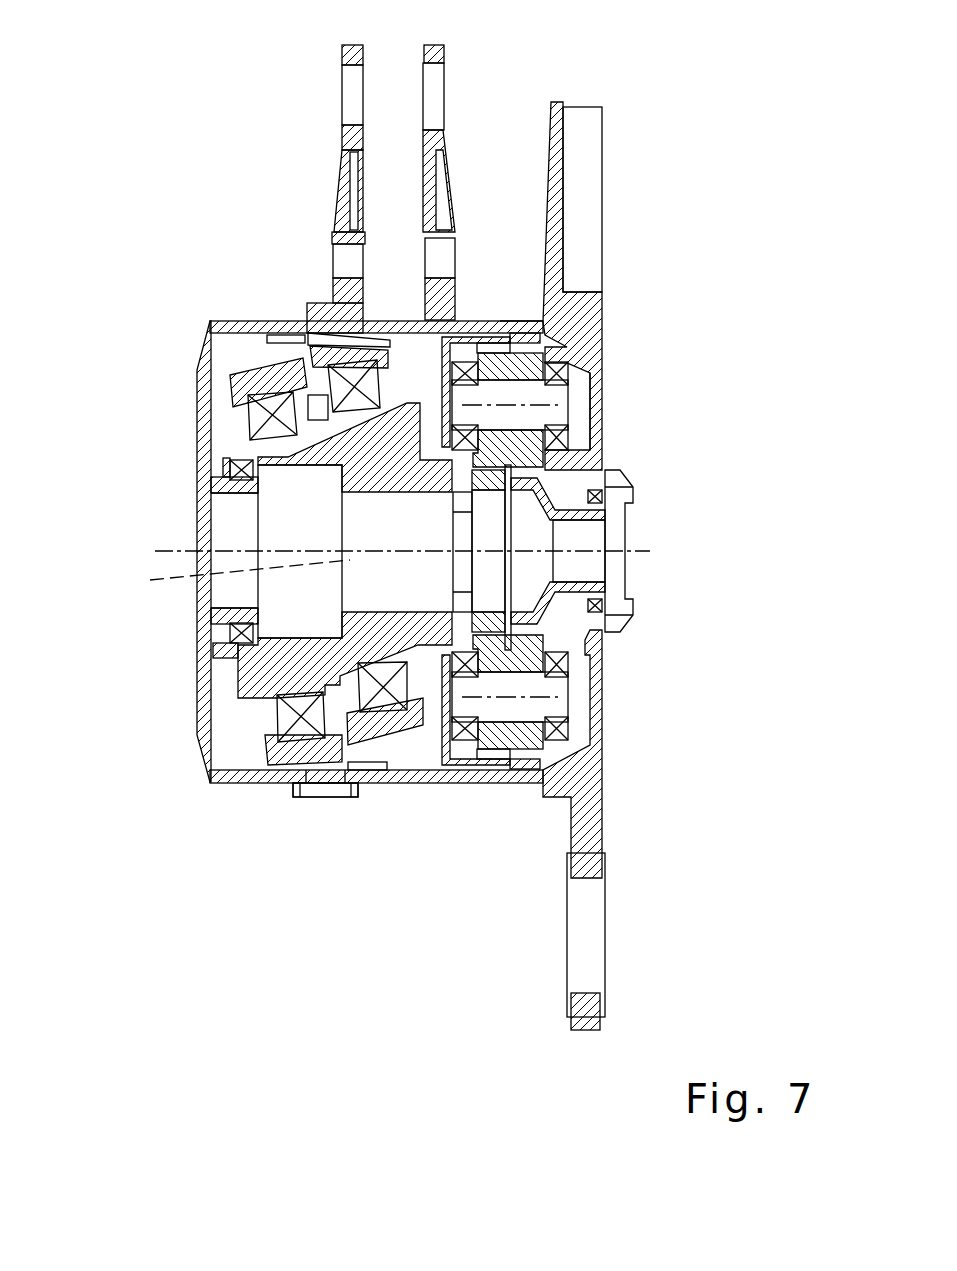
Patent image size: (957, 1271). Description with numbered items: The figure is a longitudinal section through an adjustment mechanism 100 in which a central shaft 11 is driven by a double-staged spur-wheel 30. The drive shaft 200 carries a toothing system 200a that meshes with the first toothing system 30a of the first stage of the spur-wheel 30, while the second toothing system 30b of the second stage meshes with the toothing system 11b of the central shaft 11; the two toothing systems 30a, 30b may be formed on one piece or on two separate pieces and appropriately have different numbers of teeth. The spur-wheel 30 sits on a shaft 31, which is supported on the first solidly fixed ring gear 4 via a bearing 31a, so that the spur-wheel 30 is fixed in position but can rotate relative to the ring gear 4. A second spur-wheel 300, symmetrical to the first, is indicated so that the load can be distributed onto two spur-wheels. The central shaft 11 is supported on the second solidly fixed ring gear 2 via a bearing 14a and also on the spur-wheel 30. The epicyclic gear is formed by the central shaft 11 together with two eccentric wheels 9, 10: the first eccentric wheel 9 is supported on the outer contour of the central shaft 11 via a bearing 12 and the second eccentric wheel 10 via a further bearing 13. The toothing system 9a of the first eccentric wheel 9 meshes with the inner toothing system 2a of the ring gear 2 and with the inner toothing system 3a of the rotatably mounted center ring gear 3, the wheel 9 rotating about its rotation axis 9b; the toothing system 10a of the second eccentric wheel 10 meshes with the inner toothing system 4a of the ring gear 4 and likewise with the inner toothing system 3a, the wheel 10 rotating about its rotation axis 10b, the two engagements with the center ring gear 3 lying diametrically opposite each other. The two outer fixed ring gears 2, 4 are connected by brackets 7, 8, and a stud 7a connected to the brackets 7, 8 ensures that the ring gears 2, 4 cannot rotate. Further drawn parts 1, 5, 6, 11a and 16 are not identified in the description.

The housing 1 is at (230, 687).
The second solidly fixed ring gear 2 is at (212, 325).
The inner toothing system of the second solidly fixed ring gear 2a is at (268, 322).
The rotatably mounted center ring gear 3 is at (363, 340).
The inner toothing system of the center ring gear 3a is at (330, 322).
The first solidly fixed ring gear 4 is at (555, 325).
The inner toothing system of the first solidly fixed ring gear 4a is at (312, 325).
The pin 5 is at (437, 92).
The pin 6 is at (437, 92).
The bracket 7 is at (323, 798).
The bracket 8 is at (323, 798).
The stud 7a is at (583, 920).
The first eccentric wheel 9 is at (250, 390).
The toothing system of the first eccentric wheel 9a is at (245, 372).
The rotation axis 9b is at (168, 578).
The second eccentric wheel 10 is at (372, 722).
The toothing system of the second eccentric wheel 10a is at (490, 776).
The rotation axis 10b is at (400, 532).
The central shaft 11 is at (247, 452).
The output bore 11a is at (650, 553).
The toothing system of the central shaft 11b is at (453, 692).
The bearing 12 is at (300, 720).
The further bearing 13 is at (540, 760).
The bearing 14a is at (235, 633).
The needle bearing 16 is at (620, 615).
The spur-wheel 30 is at (607, 304).
The first toothing system 30a is at (545, 345).
The second toothing system 30b is at (550, 285).
The shaft 31 is at (548, 395).
The bearing 31a is at (597, 437).
The adjustment mechanism 100 is at (636, 148).
The drive shaft 200 is at (612, 557).
The toothing system of the drive shaft 200a is at (627, 490).
The second spur-wheel 300 is at (578, 758).